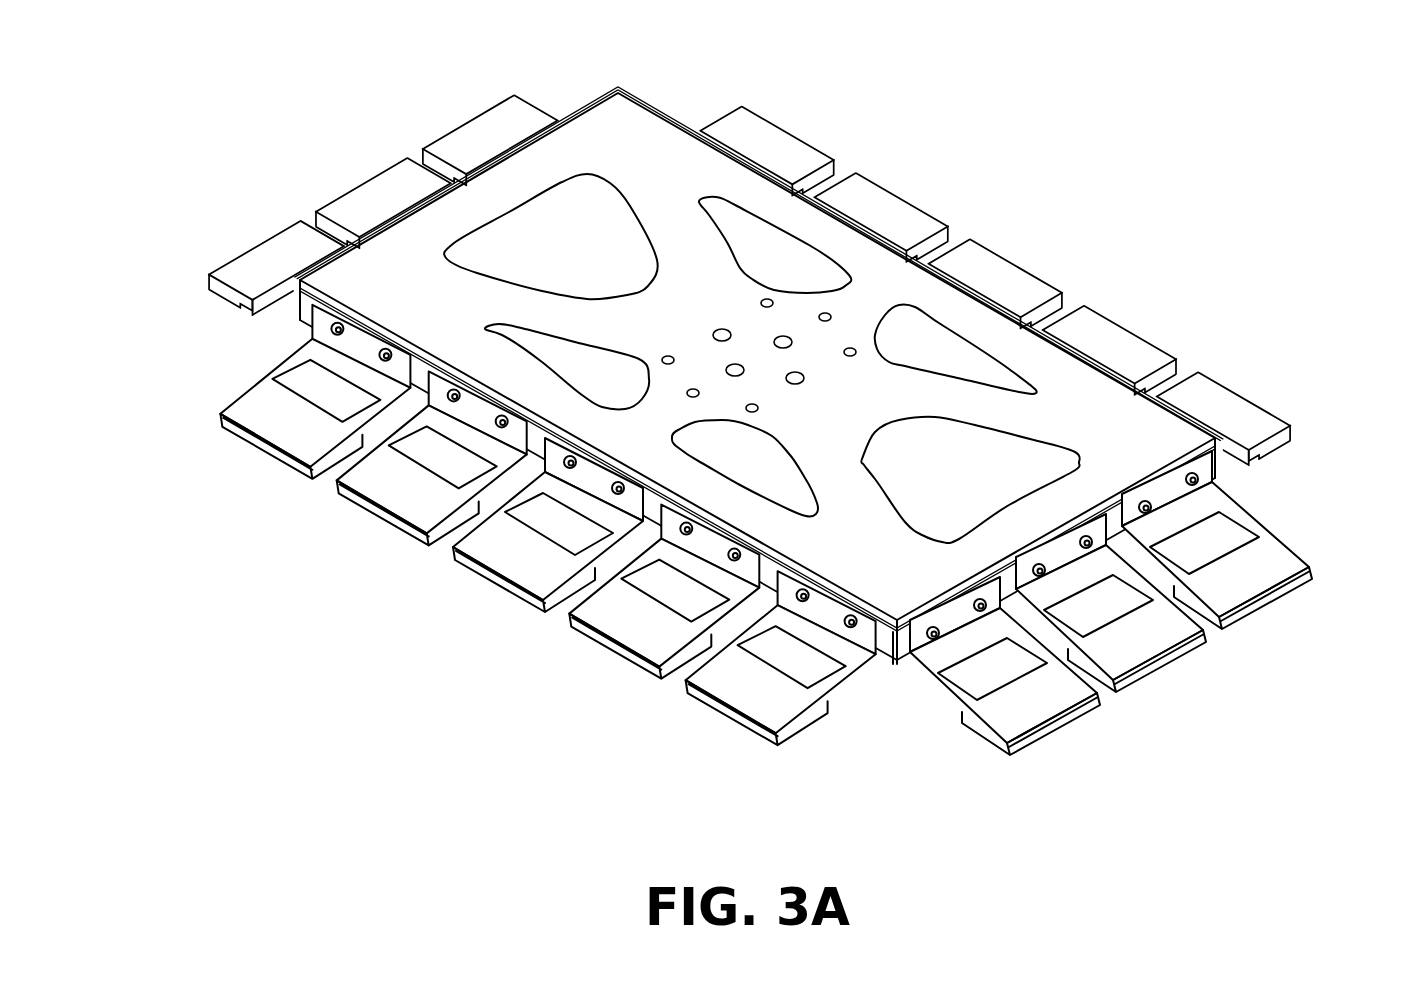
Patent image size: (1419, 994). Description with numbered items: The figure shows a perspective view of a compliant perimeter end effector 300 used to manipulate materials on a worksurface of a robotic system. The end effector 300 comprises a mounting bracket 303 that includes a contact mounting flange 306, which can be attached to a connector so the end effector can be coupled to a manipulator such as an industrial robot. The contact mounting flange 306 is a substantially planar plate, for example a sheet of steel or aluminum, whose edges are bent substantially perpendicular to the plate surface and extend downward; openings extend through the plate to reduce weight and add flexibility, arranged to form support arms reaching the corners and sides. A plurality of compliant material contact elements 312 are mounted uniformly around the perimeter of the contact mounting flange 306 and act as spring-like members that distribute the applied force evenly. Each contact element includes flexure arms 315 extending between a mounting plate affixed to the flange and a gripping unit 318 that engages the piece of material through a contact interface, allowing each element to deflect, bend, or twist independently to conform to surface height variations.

The compliant perimeter end effector 300 is at (770, 417).
The mounting bracket 303 is at (658, 89).
The contact mounting flange 306 is at (893, 660).
The compliant material contact elements 312 is at (466, 114).
The flexure arms 315 is at (275, 352).
The gripping unit 318 is at (283, 484).